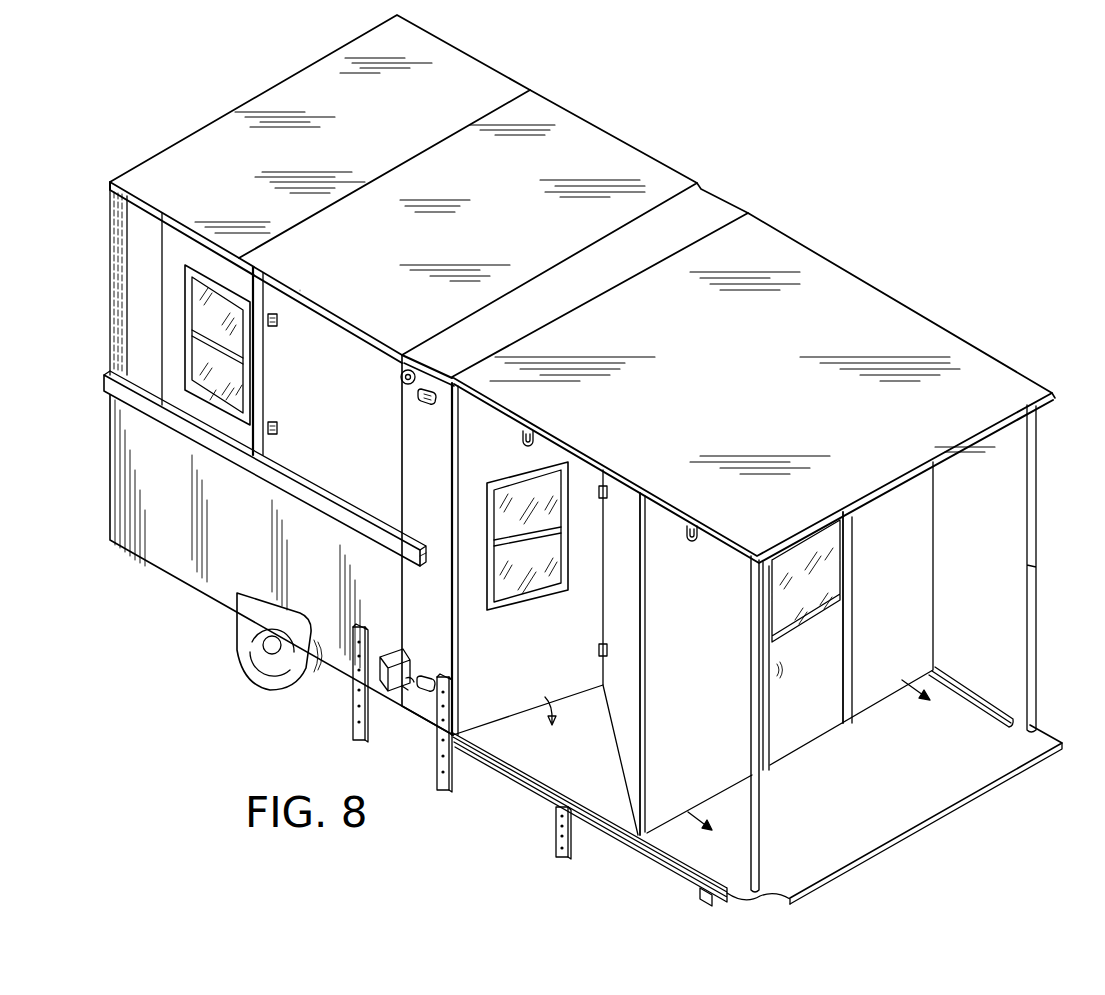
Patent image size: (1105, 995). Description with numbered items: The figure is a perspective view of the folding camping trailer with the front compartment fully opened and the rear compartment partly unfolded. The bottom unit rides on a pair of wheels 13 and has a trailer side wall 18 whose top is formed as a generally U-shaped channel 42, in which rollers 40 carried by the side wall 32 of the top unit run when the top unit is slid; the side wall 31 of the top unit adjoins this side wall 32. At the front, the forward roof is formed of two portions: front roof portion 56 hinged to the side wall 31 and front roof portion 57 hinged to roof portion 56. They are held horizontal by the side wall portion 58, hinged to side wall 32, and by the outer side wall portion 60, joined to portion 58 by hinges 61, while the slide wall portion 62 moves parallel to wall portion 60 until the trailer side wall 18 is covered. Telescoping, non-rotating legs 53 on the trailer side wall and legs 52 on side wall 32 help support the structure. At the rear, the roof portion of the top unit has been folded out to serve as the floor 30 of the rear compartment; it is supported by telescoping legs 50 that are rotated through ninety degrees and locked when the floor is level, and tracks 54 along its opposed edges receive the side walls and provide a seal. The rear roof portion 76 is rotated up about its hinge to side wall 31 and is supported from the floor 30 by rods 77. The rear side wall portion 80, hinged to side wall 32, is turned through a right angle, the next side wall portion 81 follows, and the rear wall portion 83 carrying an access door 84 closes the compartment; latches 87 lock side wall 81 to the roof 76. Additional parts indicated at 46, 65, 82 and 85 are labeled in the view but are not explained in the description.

The wheels 13 is at (287, 688).
The trailer side wall 18 is at (158, 546).
The roof portion / floor 30 is at (935, 808).
The side wall of top unit 31 is at (592, 297).
The side wall of top unit 32 is at (441, 484).
The rollers 40 is at (413, 372).
The U-shaped channel 42 is at (340, 505).
The latch 46 is at (402, 655).
The telescoping supports or legs 50 is at (568, 856).
The telescoping legs 52 is at (452, 788).
The telescoping legs 53 is at (366, 742).
The tracks 54 is at (540, 782).
The front roof portion 56 is at (498, 239).
The front roof portion 57 is at (350, 152).
The side wall portion 58 is at (356, 449).
The outer side wall portion 60 is at (175, 247).
The hinges 61 is at (278, 322).
The slide wall portion 62 is at (140, 240).
The window 65 is at (222, 297).
The rear roof portion 76 is at (772, 399).
The supports or rods 77 is at (1037, 678).
The rear side wall portion 80 is at (541, 669).
The side wall portion 81 is at (636, 614).
The hinge 82 is at (606, 487).
The rear wall portion 83 is at (706, 702).
The access door 84 is at (823, 704).
The wall panel 85 is at (906, 584).
The latches 87 is at (606, 503).